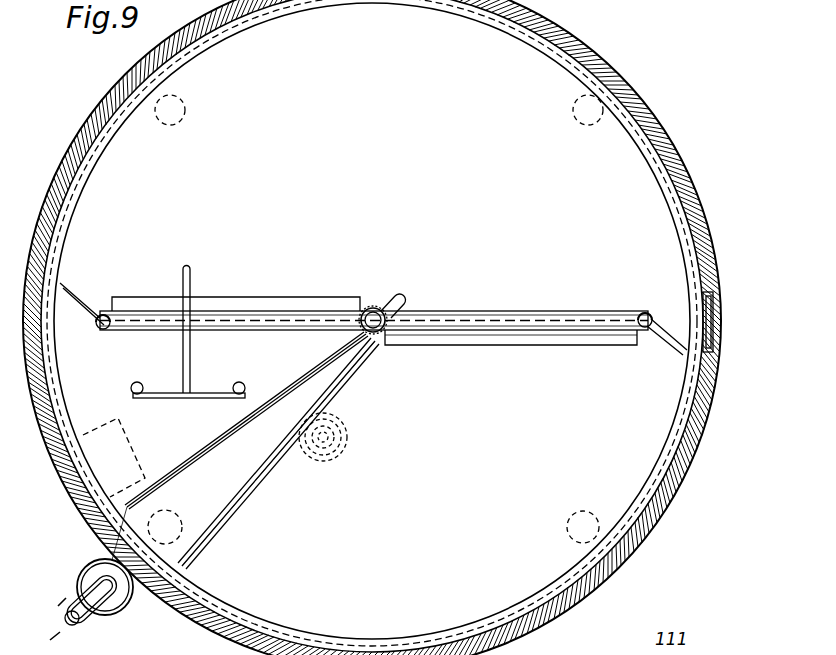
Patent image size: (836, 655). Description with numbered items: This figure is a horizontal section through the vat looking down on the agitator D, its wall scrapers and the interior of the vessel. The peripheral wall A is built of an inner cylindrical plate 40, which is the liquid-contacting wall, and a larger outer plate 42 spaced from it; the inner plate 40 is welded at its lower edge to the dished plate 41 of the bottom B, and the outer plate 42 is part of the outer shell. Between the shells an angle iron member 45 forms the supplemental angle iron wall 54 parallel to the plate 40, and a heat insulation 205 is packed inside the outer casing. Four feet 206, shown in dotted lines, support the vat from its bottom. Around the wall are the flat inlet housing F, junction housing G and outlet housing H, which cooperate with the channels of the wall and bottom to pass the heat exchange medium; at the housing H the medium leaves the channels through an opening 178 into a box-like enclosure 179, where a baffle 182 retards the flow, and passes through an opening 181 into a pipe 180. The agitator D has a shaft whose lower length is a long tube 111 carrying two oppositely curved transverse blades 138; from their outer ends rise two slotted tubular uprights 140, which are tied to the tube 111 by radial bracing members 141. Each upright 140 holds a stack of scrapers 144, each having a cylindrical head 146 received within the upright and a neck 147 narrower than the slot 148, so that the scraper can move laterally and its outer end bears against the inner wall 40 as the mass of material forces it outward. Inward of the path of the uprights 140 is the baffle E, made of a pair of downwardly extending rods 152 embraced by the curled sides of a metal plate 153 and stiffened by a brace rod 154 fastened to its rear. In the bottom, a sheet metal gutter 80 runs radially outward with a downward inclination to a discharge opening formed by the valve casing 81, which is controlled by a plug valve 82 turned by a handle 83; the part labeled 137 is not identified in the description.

The plate of the bottom 41 is at (150, 125).
The inner cylindrical plate 40 is at (654, 168).
The bottom B is at (548, 65).
The insulation 205 is at (612, 75).
The angle iron member 45 is at (640, 123).
The outer plate 42 is at (690, 174).
The angle iron wall 54 is at (688, 208).
The inlet housing F is at (720, 308).
The peripheral wall A is at (705, 424).
The feet 206 is at (180, 127).
The radial bracing members 141 is at (294, 332).
The transverse blades 138 is at (246, 300).
The agitator D is at (313, 297).
The long tube 111 is at (390, 300).
The cylindrical head 146 is at (103, 329).
The neck 147 is at (97, 322).
The scrapers 144 is at (94, 305).
The slot 148 is at (106, 312).
The uprights 140 is at (103, 334).
The brace rod 154 is at (191, 373).
The metal plate 153 is at (168, 399).
The downwardly extending rods 152 is at (130, 391).
The baffle E is at (123, 457).
The gutter 80 is at (245, 478).
The valve casing 81 is at (79, 578).
The plug valve 82 is at (126, 602).
The crank pin 137 is at (91, 626).
The handle 83 is at (72, 628).
The junction housing G is at (72, 520).
The opening 178 is at (333, 422).
The box-like enclosure 179 is at (340, 428).
The outlet housing H is at (348, 436).
The pipe 180 is at (352, 438).
The opening 181 is at (320, 462).
The baffle 182 is at (338, 455).